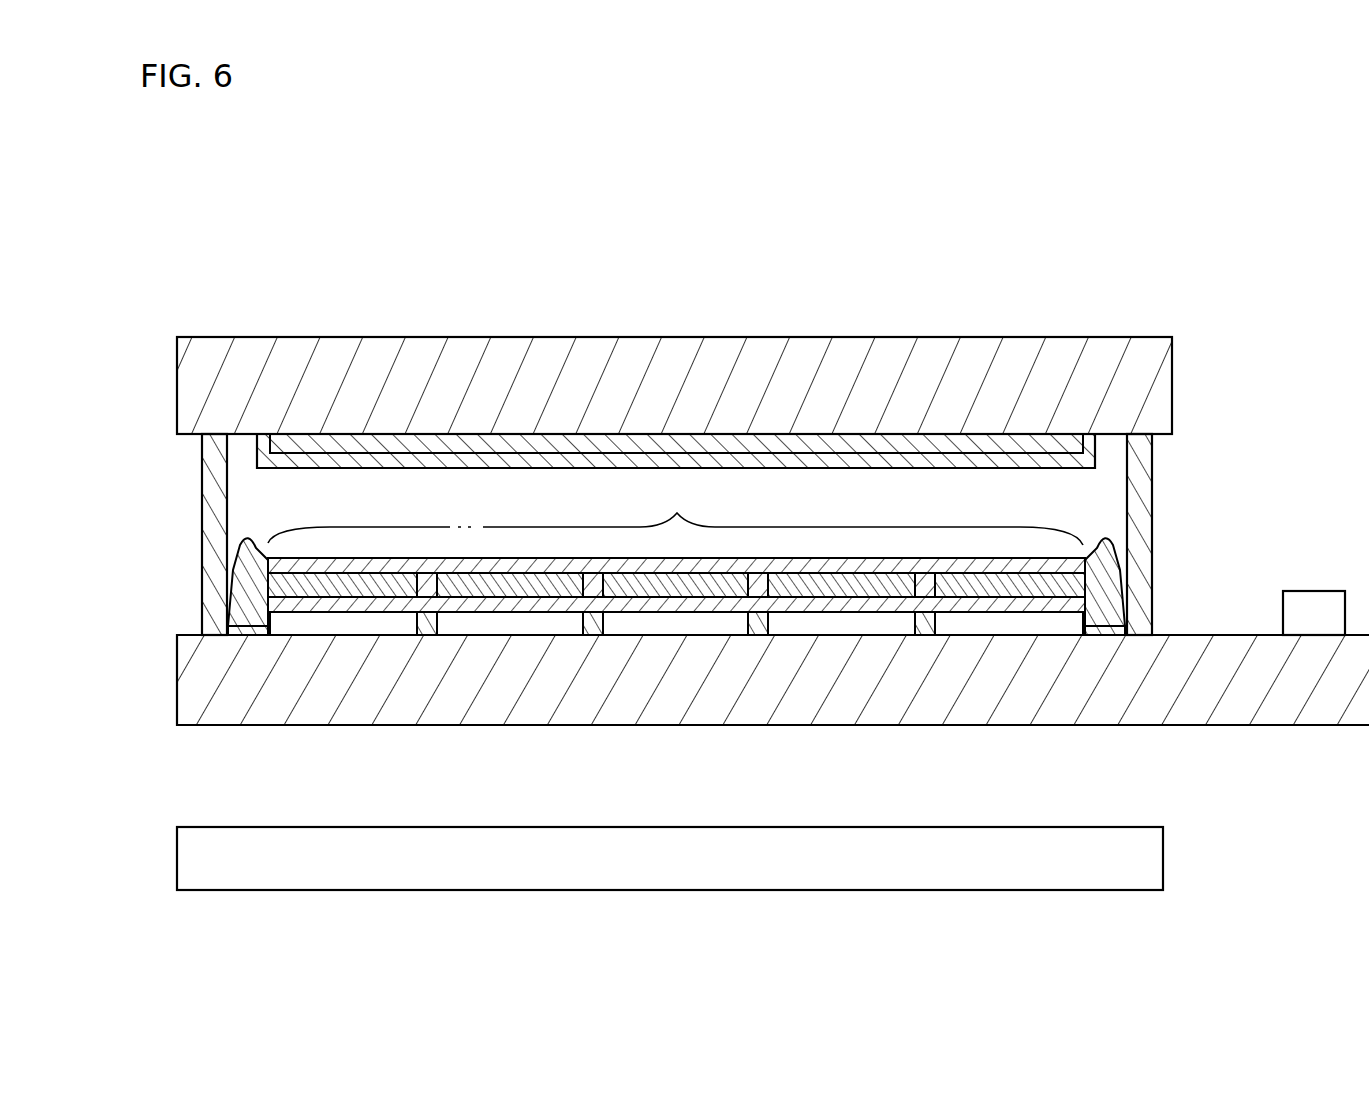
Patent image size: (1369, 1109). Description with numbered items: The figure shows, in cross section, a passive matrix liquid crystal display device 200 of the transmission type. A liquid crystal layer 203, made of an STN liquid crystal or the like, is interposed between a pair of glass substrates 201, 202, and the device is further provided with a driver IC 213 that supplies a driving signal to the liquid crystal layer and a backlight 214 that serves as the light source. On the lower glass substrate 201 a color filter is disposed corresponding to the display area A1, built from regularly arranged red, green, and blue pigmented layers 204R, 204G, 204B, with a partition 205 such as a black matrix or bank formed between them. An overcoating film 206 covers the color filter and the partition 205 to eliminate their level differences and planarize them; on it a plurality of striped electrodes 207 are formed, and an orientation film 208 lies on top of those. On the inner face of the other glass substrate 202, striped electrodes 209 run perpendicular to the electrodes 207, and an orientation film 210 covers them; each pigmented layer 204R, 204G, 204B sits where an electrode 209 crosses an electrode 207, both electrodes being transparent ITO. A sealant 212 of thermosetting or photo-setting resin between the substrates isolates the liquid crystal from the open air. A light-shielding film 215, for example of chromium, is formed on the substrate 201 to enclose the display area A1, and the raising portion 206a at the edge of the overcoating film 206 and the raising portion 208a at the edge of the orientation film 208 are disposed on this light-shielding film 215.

The liquid crystal display device 200 is at (546, 284).
The glass substrate 201 is at (1262, 725).
The glass substrate 202 is at (303, 337).
The liquid crystal layer 203 is at (1103, 482).
The pigmented layer 204R is at (296, 630).
The pigmented layer 204G is at (550, 625).
The pigmented layer 204B is at (630, 625).
The partition 205 is at (430, 625).
The overcoating film 206 is at (1090, 590).
The raising portion 206a is at (272, 610).
The electrodes 207 is at (888, 630).
The orientation film 208 is at (268, 563).
The raising portion 208a is at (240, 548).
The electrodes 209 is at (418, 440).
The orientation film 210 is at (686, 466).
The sealant 212 is at (202, 503).
The driver IC 213 is at (1318, 592).
The backlight 214 is at (1163, 850).
The light-shielding film 215 is at (235, 632).
The display area A1 is at (675, 510).